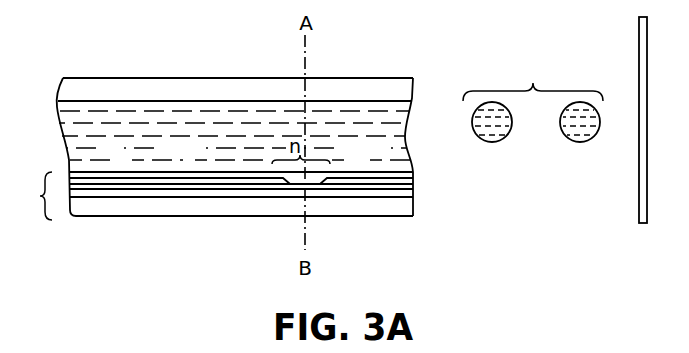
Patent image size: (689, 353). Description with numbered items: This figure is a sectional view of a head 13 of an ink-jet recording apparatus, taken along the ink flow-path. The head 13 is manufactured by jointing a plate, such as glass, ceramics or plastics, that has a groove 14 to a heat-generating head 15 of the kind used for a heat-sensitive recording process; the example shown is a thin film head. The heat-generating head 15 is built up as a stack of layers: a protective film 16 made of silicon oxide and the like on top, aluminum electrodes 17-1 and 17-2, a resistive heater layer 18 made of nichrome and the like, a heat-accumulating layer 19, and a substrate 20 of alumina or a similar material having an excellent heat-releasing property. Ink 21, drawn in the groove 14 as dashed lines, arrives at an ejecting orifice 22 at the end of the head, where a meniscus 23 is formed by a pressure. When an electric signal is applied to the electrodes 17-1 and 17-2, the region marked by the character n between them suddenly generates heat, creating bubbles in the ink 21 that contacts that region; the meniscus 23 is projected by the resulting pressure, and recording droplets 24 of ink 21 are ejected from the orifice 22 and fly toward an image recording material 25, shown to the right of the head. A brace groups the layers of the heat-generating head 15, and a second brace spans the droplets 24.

The head 13 is at (195, 78).
The groove 14 is at (237, 101).
The heat-generating head 15 is at (212, 192).
The protective film 16 is at (129, 172).
The aluminum electrode 17-1 is at (192, 178).
The aluminum electrode 17-2 is at (355, 178).
The resistive heater layer 18 is at (217, 185).
The heat-accumulating layer 19 is at (272, 192).
The substrate 20 is at (343, 210).
The ink 21 is at (122, 108).
The ejecting orifice 22 is at (413, 138).
The meniscus 23 is at (406, 133).
The recording droplets 24 is at (533, 98).
The image recording material 25 is at (639, 73).